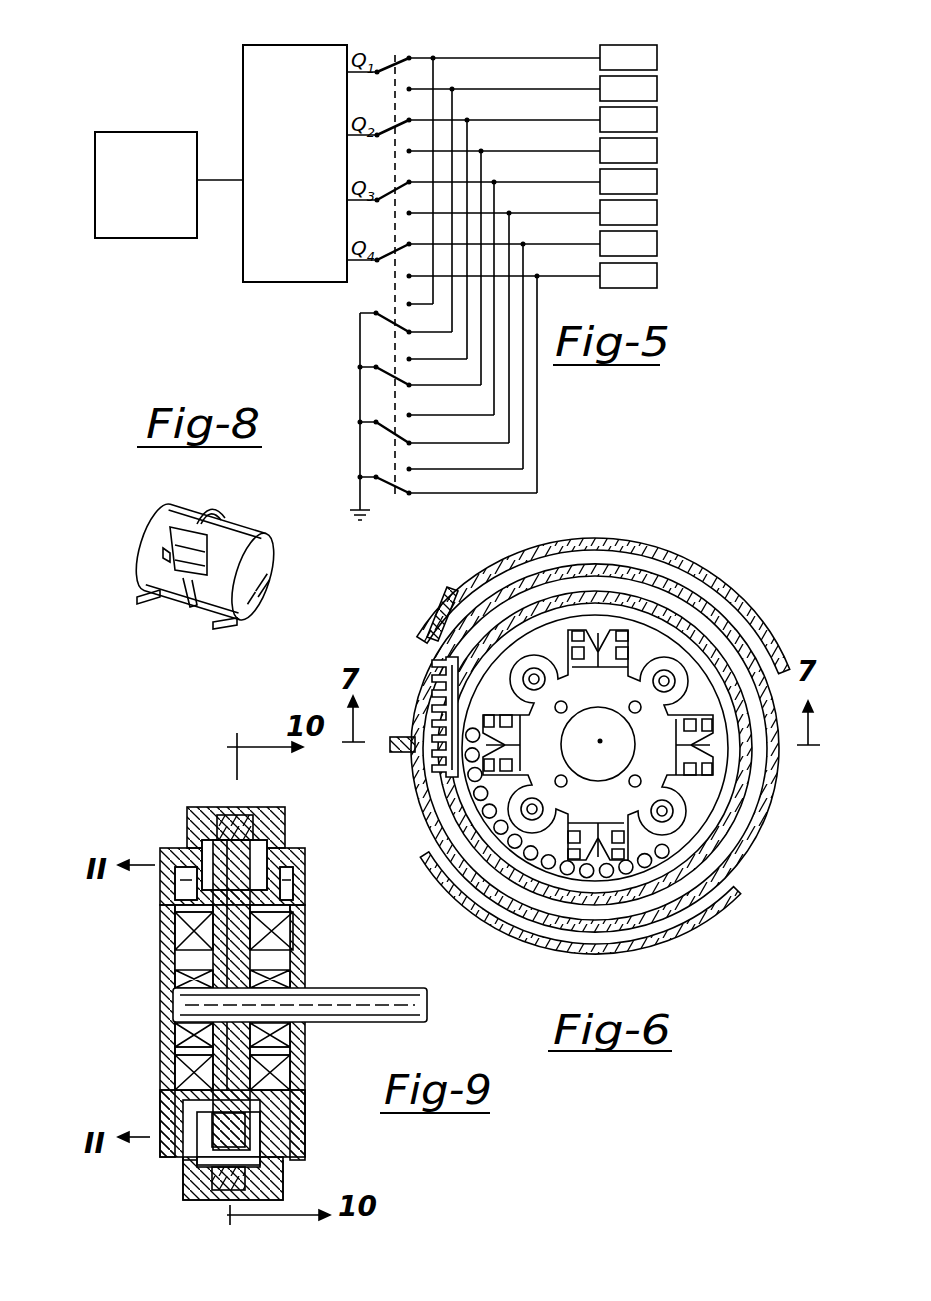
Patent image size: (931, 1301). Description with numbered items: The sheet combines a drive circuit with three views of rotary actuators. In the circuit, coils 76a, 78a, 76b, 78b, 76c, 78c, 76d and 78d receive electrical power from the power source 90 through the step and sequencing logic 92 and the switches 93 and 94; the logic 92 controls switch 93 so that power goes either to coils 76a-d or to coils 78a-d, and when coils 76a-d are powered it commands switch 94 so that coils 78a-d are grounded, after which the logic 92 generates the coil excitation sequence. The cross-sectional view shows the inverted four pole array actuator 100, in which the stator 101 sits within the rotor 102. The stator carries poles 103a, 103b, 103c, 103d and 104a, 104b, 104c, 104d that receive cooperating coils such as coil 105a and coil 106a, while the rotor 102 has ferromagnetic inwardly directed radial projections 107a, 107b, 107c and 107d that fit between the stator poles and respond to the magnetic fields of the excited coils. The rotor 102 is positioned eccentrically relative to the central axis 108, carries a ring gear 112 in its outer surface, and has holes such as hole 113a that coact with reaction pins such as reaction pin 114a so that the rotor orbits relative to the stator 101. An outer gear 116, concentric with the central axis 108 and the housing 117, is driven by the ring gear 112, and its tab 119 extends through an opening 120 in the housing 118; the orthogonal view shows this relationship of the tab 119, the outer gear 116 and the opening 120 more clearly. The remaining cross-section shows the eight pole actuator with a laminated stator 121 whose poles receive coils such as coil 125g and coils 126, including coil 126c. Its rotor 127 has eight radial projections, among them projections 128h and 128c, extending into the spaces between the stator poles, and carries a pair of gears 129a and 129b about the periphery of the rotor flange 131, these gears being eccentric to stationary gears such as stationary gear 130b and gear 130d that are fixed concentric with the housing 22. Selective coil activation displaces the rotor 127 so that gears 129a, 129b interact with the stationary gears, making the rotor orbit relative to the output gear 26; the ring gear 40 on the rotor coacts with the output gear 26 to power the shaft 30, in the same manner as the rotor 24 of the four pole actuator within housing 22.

In FIG. 5, the power source 90 is at (163, 103).
In FIG. 5, the step and sequencing logic 92 is at (250, 45).
In FIG. 5, the switch 93 is at (403, 55).
In FIG. 5, the switch 94 is at (392, 306).
In FIG. 5, the coil 76a is at (657, 58).
In FIG. 5, the coil 78a is at (657, 89).
In FIG. 5, the coil 76b is at (657, 120).
In FIG. 5, the coil 78b is at (657, 151).
In FIG. 5, the coil 76c is at (657, 182).
In FIG. 5, the coil 78c is at (657, 213).
In FIG. 5, the coil 76d is at (657, 244).
In FIG. 5, the coil 78d is at (657, 276).
In FIG. 6, the four pole array actuator 100 is at (797, 611).
In FIG. 8, the four pole array actuator 100 is at (265, 497).
In FIG. 6, the stator 101 is at (632, 826).
In FIG. 6, the rotor 102 is at (682, 825).
In FIG. 6, the stator pole 103a is at (630, 650).
In FIG. 6, the stator pole 103b is at (680, 822).
In FIG. 6, the stator pole 103c is at (575, 835).
In FIG. 6, the stator pole 103d is at (512, 708).
In FIG. 6, the stator pole 104a is at (568, 648).
In FIG. 6, the stator pole 104b is at (697, 708).
In FIG. 6, the stator pole 104c is at (620, 840).
In FIG. 6, the stator pole 104d is at (513, 770).
In FIG. 6, the coil 105a is at (627, 640).
In FIG. 6, the coil 106a is at (565, 630).
In FIG. 6, the rotor projection 107a is at (597, 650).
In FIG. 6, the rotor projection 107b is at (673, 743).
In FIG. 6, the rotor projection 107c is at (598, 850).
In FIG. 6, the rotor projection 107d is at (505, 740).
In FIG. 6, the central axis 108 is at (599, 743).
In FIG. 6, the ring gear 112 is at (440, 772).
In FIG. 6, the hole 113a is at (673, 684).
In FIG. 6, the reaction pin 114a is at (672, 670).
In FIG. 6, the outer gear 116 is at (430, 720).
In FIG. 8, the outer gear 116 is at (240, 522).
In FIG. 6, the housing 117 is at (472, 905).
In FIG. 8, the housing 118 is at (248, 542).
In FIG. 6, the tab 119 is at (400, 753).
In FIG. 8, the tab 119 is at (170, 553).
In FIG. 6, the opening 120 is at (427, 637).
In FIG. 8, the opening 120 is at (185, 535).
In FIG. 9, the opening 120 is at (98, 998).
In FIG. 9, the laminated stator 121 is at (247, 1183).
In FIG. 9, the coil 125g is at (215, 843).
In FIG. 9, the coils 126 is at (173, 1040).
In FIG. 9, the coil 126c is at (210, 1150).
In FIG. 9, the rotor 127 is at (233, 870).
In FIG. 9, the rotor projection 128h is at (267, 847).
In FIG. 9, the rotor projection 128c is at (233, 1133).
In FIG. 9, the gear 129a is at (280, 900).
In FIG. 9, the gear 129b is at (173, 893).
In FIG. 9, the stationary gear 130b is at (193, 857).
In FIG. 9, the pocket 130d is at (283, 873).
In FIG. 9, the rotor flange 131 is at (287, 913).
In FIG. 9, the output gear 26 is at (293, 947).
In FIG. 9, the shaft 30 is at (413, 1005).
In FIG. 9, the ring gear 40 is at (250, 1047).
In FIG. 9, the rotor 24 is at (163, 1097).
In FIG. 9, the housing 22 is at (183, 1150).